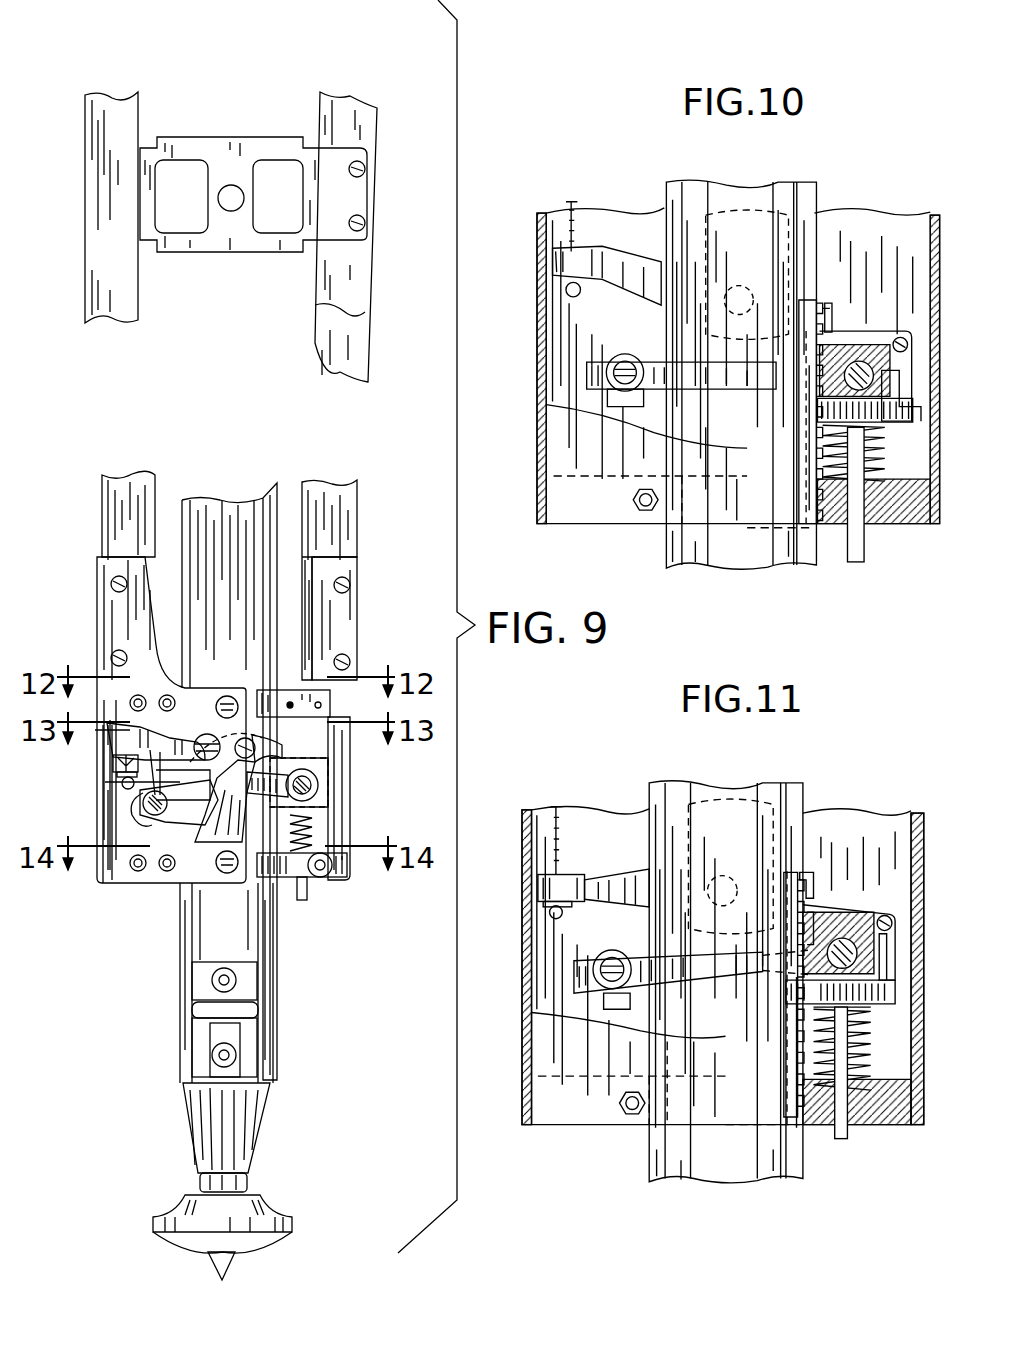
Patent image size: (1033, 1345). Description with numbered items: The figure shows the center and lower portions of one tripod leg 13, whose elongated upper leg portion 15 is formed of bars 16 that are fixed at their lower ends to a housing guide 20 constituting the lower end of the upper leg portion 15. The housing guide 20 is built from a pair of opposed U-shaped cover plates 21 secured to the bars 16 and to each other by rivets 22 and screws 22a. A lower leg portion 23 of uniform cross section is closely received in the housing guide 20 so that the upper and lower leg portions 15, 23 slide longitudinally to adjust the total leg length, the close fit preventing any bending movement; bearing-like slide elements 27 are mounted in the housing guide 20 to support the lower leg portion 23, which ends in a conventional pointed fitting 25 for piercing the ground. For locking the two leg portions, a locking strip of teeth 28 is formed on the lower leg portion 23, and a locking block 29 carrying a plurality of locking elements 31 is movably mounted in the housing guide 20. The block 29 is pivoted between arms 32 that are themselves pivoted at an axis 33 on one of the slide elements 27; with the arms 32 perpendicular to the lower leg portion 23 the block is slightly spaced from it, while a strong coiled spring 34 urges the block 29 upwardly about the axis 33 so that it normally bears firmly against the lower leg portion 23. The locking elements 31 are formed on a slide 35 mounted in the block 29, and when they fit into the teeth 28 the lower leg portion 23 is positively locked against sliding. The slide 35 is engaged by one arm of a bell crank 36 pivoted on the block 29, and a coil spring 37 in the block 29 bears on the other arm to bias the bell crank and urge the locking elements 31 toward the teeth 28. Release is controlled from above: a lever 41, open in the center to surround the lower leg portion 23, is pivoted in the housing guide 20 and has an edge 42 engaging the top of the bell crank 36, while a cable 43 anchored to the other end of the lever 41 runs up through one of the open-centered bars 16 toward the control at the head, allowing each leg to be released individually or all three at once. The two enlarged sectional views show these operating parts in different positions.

In FIG. 9, the tripod leg 13 is at (390, 82).
In FIG. 9, the upper leg portion 15 is at (125, 327).
In FIG. 9, the bars 16 is at (147, 287).
In FIG. 9, the housing guide 20 is at (357, 610).
In FIG. 10, the housing guide 20 is at (883, 210).
In FIG. 11, the housing guide 20 is at (912, 768).
In FIG. 9, the U-shaped cover plates 21 is at (140, 636).
In FIG. 9, the rivets 22 is at (228, 695).
In FIG. 9, the screws 22a is at (112, 658).
In FIG. 9, the lower leg portion 23 is at (218, 508).
In FIG. 10, the lower leg portion 23 is at (715, 190).
In FIG. 11, the lower leg portion 23 is at (726, 982).
In FIG. 9, the pointed fitting 25 is at (257, 1200).
In FIG. 9, the slide elements 27 is at (115, 722).
In FIG. 10, the slide elements 27 is at (550, 392).
In FIG. 11, the slide elements 27 is at (535, 990).
In FIG. 10, the locking strip of teeth 28 is at (822, 325).
In FIG. 11, the locking strip of teeth 28 is at (778, 1013).
In FIG. 9, the locking block 29 is at (340, 810).
In FIG. 10, the locking block 29 is at (898, 327).
In FIG. 11, the locking block 29 is at (866, 895).
In FIG. 11, the locking elements 31 is at (775, 965).
In FIG. 9, the arms 32 is at (140, 806).
In FIG. 11, the arms 32 is at (668, 972).
In FIG. 9, the axis 33 is at (165, 805).
In FIG. 10, the axis 33 is at (617, 355).
In FIG. 11, the axis 33 is at (603, 936).
In FIG. 9, the coiled spring 34 is at (310, 830).
In FIG. 10, the coiled spring 34 is at (862, 455).
In FIG. 11, the coiled spring 34 is at (840, 1048).
In FIG. 11, the slide 35 is at (838, 1010).
In FIG. 9, the bell crank 36 is at (330, 772).
In FIG. 11, the bell crank 36 is at (840, 1030).
In FIG. 10, the coil spring 37 is at (840, 340).
In FIG. 11, the coil spring 37 is at (812, 910).
In FIG. 9, the lever 41 is at (112, 762).
In FIG. 10, the lever 41 is at (633, 256).
In FIG. 11, the lever 41 is at (615, 862).
In FIG. 9, the edge 42 is at (278, 752).
In FIG. 10, the edge 42 is at (825, 305).
In FIG. 11, the edge 42 is at (790, 872).
In FIG. 9, the cable 43 is at (120, 746).
In FIG. 10, the cable 43 is at (575, 207).
In FIG. 11, the cable 43 is at (560, 846).